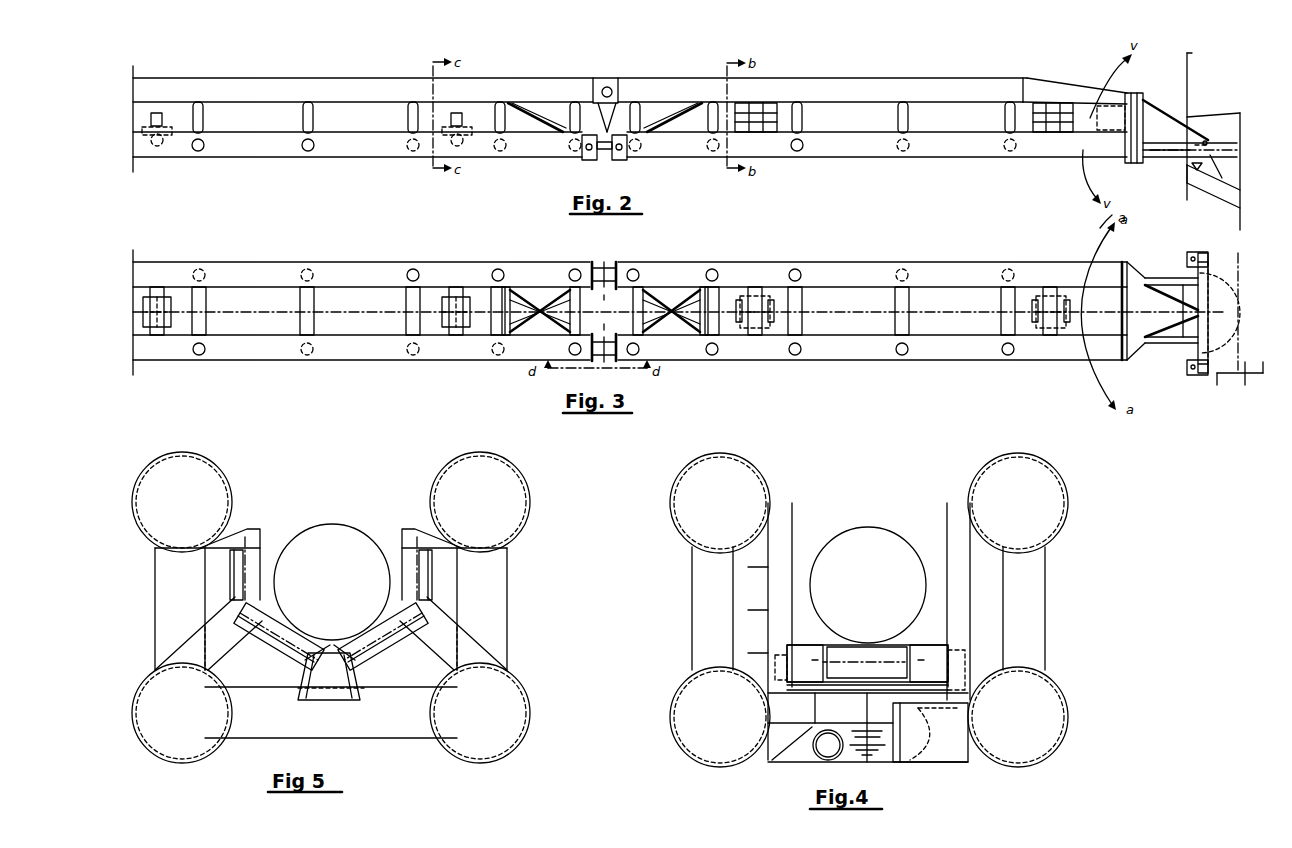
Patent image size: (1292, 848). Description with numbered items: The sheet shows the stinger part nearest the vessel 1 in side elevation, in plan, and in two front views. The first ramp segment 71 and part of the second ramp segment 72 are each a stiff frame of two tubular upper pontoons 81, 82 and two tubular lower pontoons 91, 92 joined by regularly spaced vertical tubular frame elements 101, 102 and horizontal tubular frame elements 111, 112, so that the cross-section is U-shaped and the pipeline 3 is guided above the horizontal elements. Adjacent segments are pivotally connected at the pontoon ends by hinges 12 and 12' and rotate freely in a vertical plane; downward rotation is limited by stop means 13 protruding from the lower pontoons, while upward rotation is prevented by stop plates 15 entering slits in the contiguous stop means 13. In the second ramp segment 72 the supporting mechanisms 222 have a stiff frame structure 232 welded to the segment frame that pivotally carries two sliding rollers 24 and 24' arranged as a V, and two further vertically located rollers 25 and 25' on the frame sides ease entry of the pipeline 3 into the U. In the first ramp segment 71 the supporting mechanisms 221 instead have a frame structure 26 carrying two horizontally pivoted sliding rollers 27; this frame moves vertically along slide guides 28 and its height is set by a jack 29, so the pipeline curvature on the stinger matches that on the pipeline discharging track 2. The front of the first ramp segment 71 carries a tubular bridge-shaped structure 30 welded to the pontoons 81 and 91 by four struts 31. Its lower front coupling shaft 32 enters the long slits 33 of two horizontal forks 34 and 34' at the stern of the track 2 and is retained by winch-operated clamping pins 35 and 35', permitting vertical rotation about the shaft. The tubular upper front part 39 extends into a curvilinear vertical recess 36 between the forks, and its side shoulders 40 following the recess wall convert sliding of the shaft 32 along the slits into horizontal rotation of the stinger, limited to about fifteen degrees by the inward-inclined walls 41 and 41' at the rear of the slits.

In FIG. 2, the vessel 1 is at (1205, 68).
In FIG. 2, the pipeline discharging track 2 is at (1238, 135).
In FIG. 3, the pipeline discharging track 2 is at (1245, 375).
In FIG. 5, the pipeline 3 is at (345, 538).
In FIG. 4, the pipeline 3 is at (884, 542).
In FIG. 2, the first ramp segment 71 is at (906, 156).
In FIG. 3, the first ramp segment 71 is at (930, 366).
In FIG. 2, the second ramp segment 72 is at (267, 162).
In FIG. 3, the second ramp segment 72 is at (421, 368).
In FIG. 2, the upper pontoons of the first ramp segment 81 is at (856, 86).
In FIG. 3, the upper pontoons of the first ramp segment 81 is at (852, 272).
In FIG. 4, the upper pontoons of the first ramp segment 81 is at (760, 480).
In FIG. 2, the upper pontoons of the second ramp segment 82 is at (346, 84).
In FIG. 3, the upper pontoons of the second ramp segment 82 is at (365, 272).
In FIG. 5, the upper pontoons of the second ramp segment 82 is at (222, 478).
In FIG. 2, the lower pontoons of the first ramp segment 91 is at (848, 150).
In FIG. 4, the lower pontoons of the first ramp segment 91 is at (676, 742).
In FIG. 2, the lower pontoons of the second ramp segment 92 is at (341, 152).
In FIG. 3, the lower pontoons of the second ramp segment 92 is at (361, 347).
In FIG. 5, the lower pontoons of the second ramp segment 92 is at (202, 750).
In FIG. 2, the vertical frame elements of the first ramp segment 101 is at (802, 118).
In FIG. 3, the vertical frame elements of the first ramp segment 101 is at (716, 270).
In FIG. 4, the vertical frame elements of the first ramp segment 101 is at (700, 598).
In FIG. 2, the vertical frame elements of the second ramp segment 102 is at (203, 118).
In FIG. 3, the vertical frame elements of the second ramp segment 102 is at (205, 270).
In FIG. 5, the vertical frame elements of the second ramp segment 102 is at (162, 588).
In FIG. 2, the horizontal frame elements of the first ramp segment 111 is at (797, 152).
In FIG. 3, the horizontal frame elements of the first ramp segment 111 is at (805, 320).
In FIG. 4, the horizontal frame elements of the first ramp segment 111 is at (760, 752).
In FIG. 2, the horizontal frame elements of the second ramp segment 112 is at (197, 152).
In FIG. 3, the horizontal frame elements of the second ramp segment 112 is at (206, 310).
In FIG. 5, the horizontal frame elements of the second ramp segment 112 is at (374, 726).
In FIG. 2, the hinge 12 is at (616, 88).
In FIG. 3, the hinge 12 is at (610, 338).
In FIG. 3, the hinge 12' is at (615, 267).
In FIG. 2, the stop means 13 is at (588, 160).
In FIG. 2, the stop plate 15 is at (605, 150).
In FIG. 2, the supporting mechanisms of the first ramp segment 221 is at (760, 106).
In FIG. 3, the supporting mechanisms of the first ramp segment 221 is at (757, 292).
In FIG. 4, the supporting mechanisms of the first ramp segment 221 is at (803, 630).
In FIG. 2, the supporting mechanisms of the second ramp segment 222 is at (162, 114).
In FIG. 3, the supporting mechanisms of the second ramp segment 222 is at (162, 290).
In FIG. 5, the supporting mechanisms of the second ramp segment 222 is at (282, 678).
In FIG. 5, the stiff frame structure 232 is at (205, 638).
In FIG. 5, the sliding roller 24 is at (279, 632).
In FIG. 5, the sliding roller 24' is at (383, 632).
In FIG. 5, the sliding roller 25 is at (259, 557).
In FIG. 5, the sliding roller 25' is at (404, 558).
In FIG. 4, the frame structure 26 is at (795, 670).
In FIG. 3, the sliding rollers 27 is at (902, 307).
In FIG. 4, the sliding rollers 27 is at (898, 648).
In FIG. 4, the slide guides 28 is at (778, 528).
In FIG. 4, the jack 29 is at (878, 750).
In FIG. 2, the tubular bridge-shaped structure 30 is at (1160, 96).
In FIG. 3, the tubular bridge-shaped structure 30 is at (1166, 264).
In FIG. 2, the struts 31 is at (1082, 98).
In FIG. 3, the struts 31 is at (1104, 270).
In FIG. 2, the coupling shaft 32 is at (1222, 174).
In FIG. 3, the coupling shaft 32 is at (1208, 256).
In FIG. 2, the slit 33 is at (1232, 153).
In FIG. 2, the fork 34 is at (1171, 189).
In FIG. 3, the fork 34 is at (1251, 345).
In FIG. 3, the fork 34' is at (1255, 302).
In FIG. 2, the clamping pin 35 is at (1172, 173).
In FIG. 3, the clamping pin 35 is at (1183, 376).
In FIG. 3, the clamping pin 35' is at (1198, 245).
In FIG. 3, the vertical recess 36 is at (1236, 304).
In FIG. 2, the tubular upper front part 39 is at (1205, 138).
In FIG. 3, the tubular upper front part 39 is at (1208, 329).
In FIG. 2, the vertical side shoulder 40 is at (1205, 143).
In FIG. 3, the vertical side shoulder 40 is at (1198, 262).
In FIG. 3, the inclined wall 41 is at (1218, 391).
In FIG. 3, the inclined wall 41' is at (1247, 262).